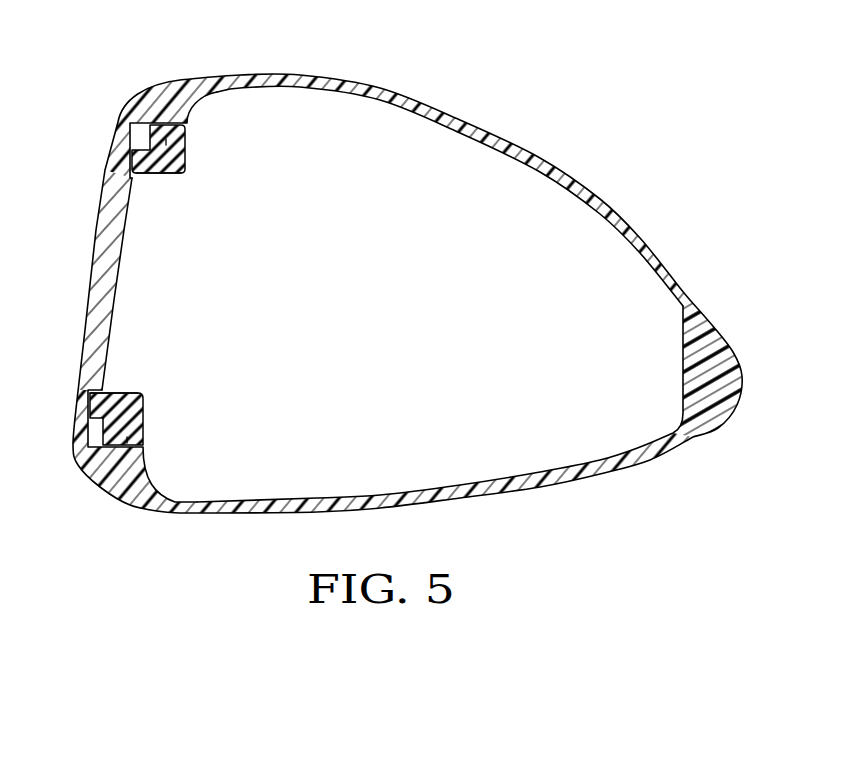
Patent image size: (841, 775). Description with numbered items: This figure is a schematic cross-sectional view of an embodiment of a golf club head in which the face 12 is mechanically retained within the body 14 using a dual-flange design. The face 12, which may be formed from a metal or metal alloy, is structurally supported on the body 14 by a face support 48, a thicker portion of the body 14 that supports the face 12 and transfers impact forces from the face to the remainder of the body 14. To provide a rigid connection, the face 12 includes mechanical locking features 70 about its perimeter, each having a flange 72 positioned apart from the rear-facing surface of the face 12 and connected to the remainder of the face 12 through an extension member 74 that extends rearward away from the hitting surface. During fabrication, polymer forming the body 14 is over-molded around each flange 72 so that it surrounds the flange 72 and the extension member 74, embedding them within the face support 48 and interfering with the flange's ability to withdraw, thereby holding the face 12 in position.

The face portion 12 is at (80, 263).
The body portion 14 is at (459, 502).
The face support 48 is at (187, 166).
The mechanical locking feature 70 is at (183, 140).
The flange 72 is at (160, 130).
The extension member 74 is at (158, 176).